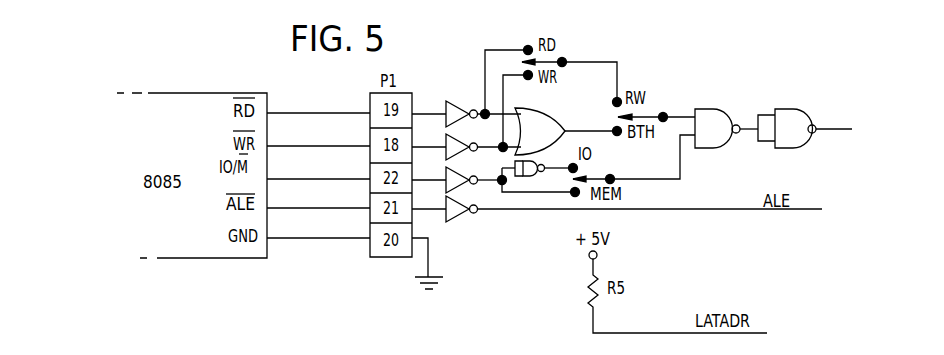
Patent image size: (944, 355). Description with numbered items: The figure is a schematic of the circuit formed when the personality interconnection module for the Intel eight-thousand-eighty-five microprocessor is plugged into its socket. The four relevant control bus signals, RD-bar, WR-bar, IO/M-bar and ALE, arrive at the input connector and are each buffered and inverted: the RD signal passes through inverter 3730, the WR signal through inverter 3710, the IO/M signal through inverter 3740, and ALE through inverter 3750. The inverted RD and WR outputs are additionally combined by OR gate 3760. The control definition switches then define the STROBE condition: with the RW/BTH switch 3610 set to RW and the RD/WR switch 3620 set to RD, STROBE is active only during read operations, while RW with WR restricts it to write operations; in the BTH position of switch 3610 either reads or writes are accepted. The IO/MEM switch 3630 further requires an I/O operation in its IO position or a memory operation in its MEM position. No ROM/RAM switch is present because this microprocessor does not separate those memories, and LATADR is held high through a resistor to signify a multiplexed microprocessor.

The inverter 3730 is at (458, 100).
The inverter 3710 is at (451, 147).
The inverter 3740 is at (451, 180).
The inverter 3750 is at (462, 216).
The OR gate 3760 is at (540, 115).
The control definition switch 3620 is at (555, 58).
The RW/BTH switch 3610 is at (650, 112).
The IO/MEM switch 3630 is at (598, 176).